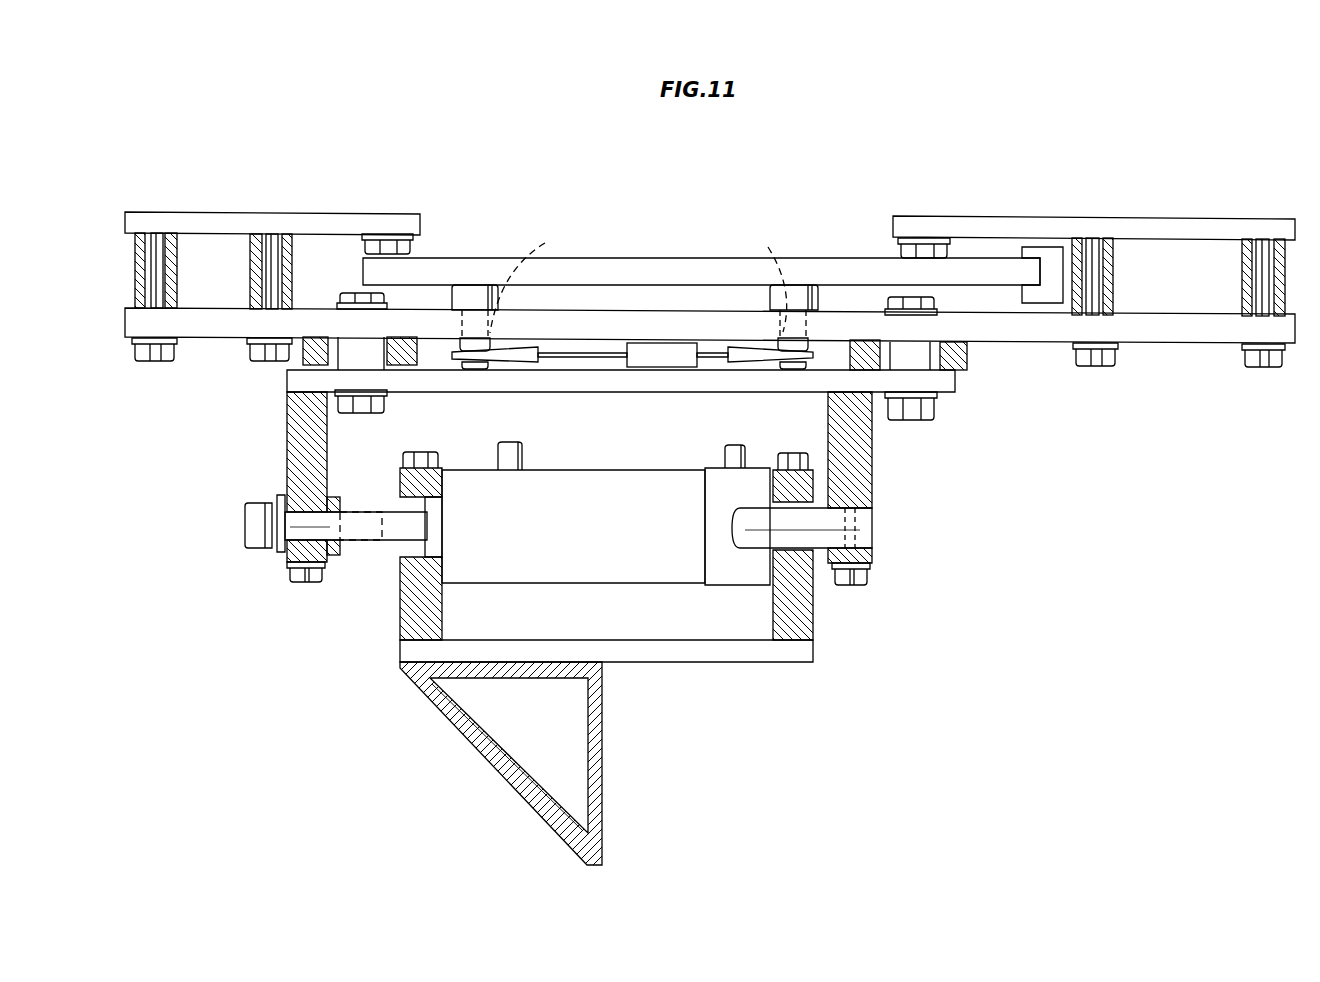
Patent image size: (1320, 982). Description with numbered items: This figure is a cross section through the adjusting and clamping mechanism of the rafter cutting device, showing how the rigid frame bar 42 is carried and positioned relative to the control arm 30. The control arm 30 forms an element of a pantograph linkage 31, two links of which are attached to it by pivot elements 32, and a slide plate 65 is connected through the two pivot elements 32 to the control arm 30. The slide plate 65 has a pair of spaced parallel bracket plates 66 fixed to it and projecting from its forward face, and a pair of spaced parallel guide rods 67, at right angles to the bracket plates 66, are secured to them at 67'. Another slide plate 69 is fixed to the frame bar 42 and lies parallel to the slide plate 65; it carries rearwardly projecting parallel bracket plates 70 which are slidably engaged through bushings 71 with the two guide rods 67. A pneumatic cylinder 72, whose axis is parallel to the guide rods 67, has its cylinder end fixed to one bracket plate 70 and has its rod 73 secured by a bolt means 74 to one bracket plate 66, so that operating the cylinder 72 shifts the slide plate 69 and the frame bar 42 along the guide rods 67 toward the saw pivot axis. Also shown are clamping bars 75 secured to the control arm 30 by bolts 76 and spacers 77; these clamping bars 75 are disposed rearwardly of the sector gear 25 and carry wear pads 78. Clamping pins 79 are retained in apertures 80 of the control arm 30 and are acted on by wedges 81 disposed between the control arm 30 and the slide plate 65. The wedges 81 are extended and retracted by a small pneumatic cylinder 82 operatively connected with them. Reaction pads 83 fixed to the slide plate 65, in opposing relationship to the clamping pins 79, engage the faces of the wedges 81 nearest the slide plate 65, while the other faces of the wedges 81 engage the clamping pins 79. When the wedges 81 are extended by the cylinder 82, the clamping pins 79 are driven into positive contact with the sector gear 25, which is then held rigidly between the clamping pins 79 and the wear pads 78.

The sector gear 25 is at (693, 262).
The control arm 30 is at (1023, 328).
The pantograph linkage 31 is at (300, 370).
The pivot elements 32 is at (362, 413).
The frame bar 42 is at (600, 846).
The slide plate 65 is at (597, 381).
The bracket plates 66 is at (290, 452).
The guide rods 67 is at (763, 528).
The securing location of guide rods 67' is at (885, 572).
The slide plate 69 is at (620, 645).
The bracket plates 70 is at (408, 610).
The bushings 71 is at (775, 495).
The pneumatic cylinder 72 is at (645, 576).
The rod 73 is at (392, 548).
The bolt means 74 is at (248, 525).
The clamping bars 75 is at (340, 215).
The bolts 76 is at (142, 362).
The spacers 77 is at (177, 275).
The wear pads 78 is at (390, 245).
The clamping pins 79 is at (480, 298).
The apertures 80 is at (545, 243).
The wedges 81 is at (508, 362).
The small pneumatic cylinder 82 is at (683, 368).
The reaction pads 83 is at (476, 360).